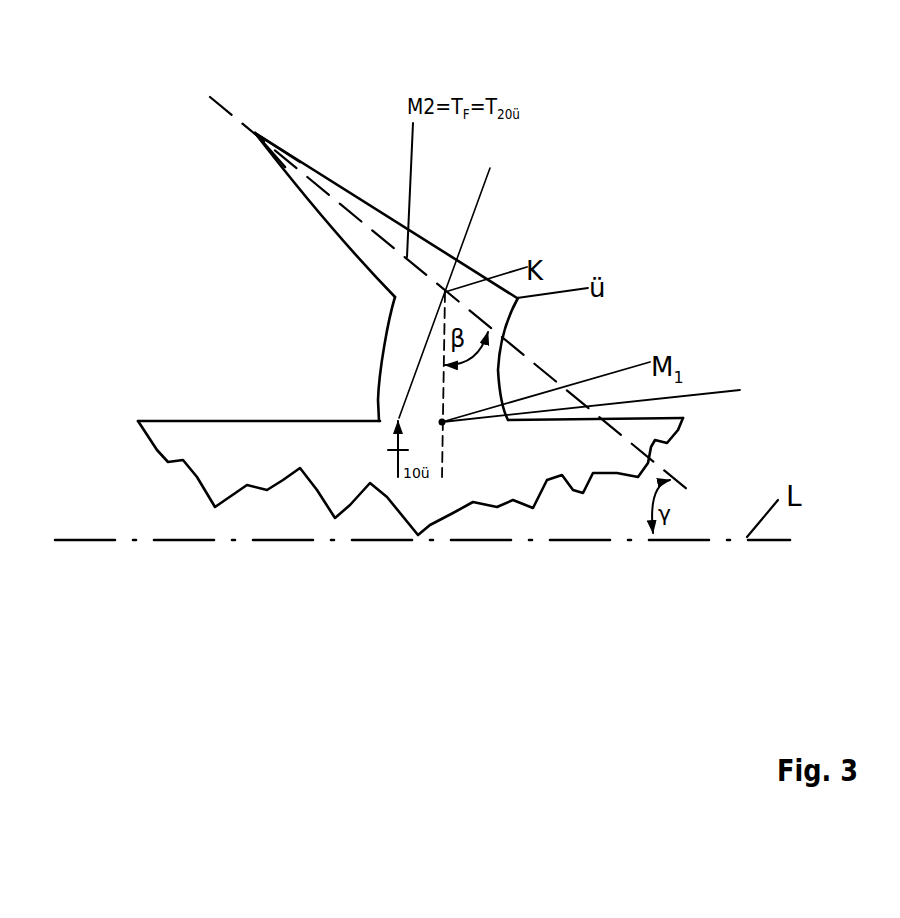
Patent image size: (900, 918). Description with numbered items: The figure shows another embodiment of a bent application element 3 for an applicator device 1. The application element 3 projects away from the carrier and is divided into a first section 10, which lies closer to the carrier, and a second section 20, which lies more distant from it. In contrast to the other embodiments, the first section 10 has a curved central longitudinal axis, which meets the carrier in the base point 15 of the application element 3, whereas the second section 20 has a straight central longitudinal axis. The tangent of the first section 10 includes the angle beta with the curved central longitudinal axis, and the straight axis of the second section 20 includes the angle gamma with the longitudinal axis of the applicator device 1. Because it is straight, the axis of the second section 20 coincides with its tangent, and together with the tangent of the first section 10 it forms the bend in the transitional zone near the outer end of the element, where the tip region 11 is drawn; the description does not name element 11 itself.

The applicator device 1 is at (207, 407).
The application element 3 is at (417, 225).
The first section 10 is at (503, 330).
The tooth tip 11 is at (255, 132).
The base point 15 is at (609, 401).
The second section 20 is at (327, 176).